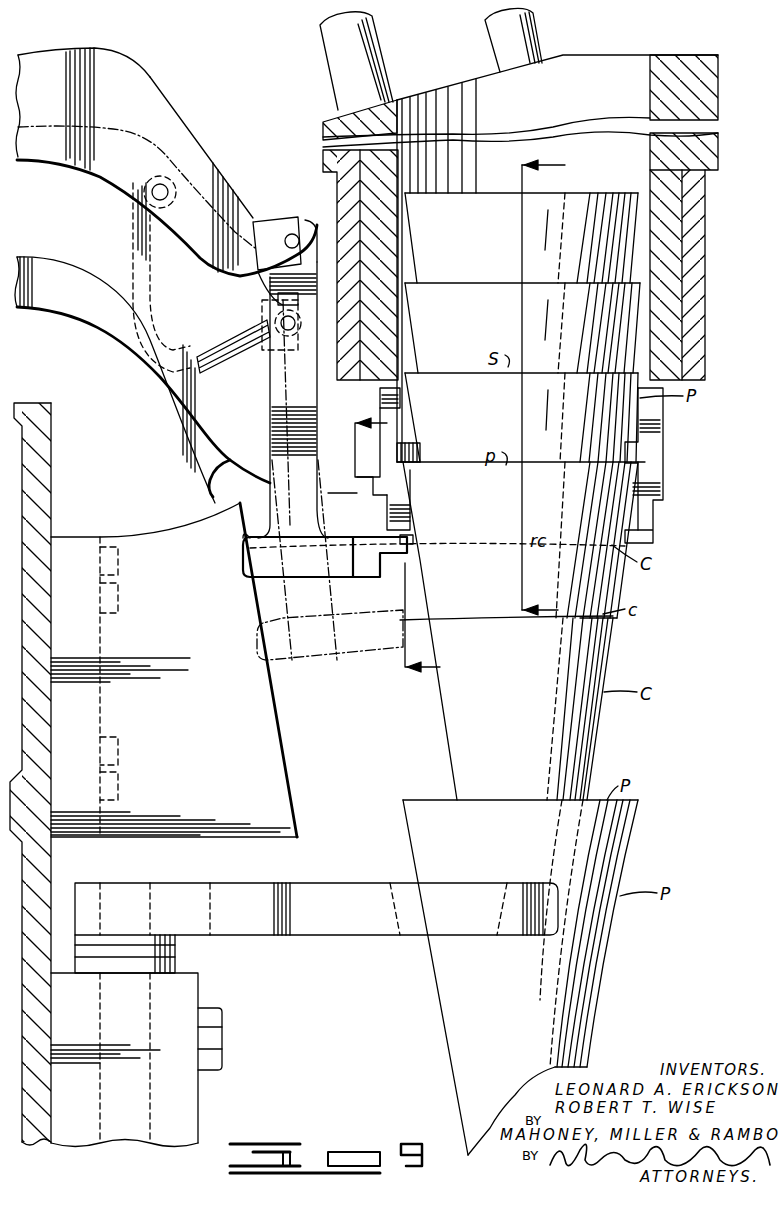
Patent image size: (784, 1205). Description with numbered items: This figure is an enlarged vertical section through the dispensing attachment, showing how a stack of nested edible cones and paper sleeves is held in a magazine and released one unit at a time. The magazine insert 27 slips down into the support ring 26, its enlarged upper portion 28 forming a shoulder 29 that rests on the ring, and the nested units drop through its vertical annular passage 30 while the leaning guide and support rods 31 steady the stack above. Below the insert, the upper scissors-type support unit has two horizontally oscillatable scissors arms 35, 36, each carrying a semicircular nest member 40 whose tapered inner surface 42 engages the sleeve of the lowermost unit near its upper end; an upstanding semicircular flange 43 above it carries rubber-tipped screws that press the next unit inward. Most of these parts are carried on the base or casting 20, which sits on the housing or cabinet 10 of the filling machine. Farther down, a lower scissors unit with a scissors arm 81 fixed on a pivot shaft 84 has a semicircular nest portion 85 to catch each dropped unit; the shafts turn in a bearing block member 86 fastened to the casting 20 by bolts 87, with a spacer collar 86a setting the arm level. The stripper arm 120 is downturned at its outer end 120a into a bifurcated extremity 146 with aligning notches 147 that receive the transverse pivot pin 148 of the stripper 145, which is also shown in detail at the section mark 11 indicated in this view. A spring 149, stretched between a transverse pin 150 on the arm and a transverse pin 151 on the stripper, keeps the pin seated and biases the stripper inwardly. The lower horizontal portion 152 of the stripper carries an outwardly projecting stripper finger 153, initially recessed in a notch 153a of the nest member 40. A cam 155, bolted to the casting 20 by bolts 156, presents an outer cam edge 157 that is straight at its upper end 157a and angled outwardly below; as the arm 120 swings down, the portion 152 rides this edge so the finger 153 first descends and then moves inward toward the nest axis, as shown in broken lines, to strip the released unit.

The base or casting 20 is at (53, 436).
The support ring 26 is at (697, 310).
The magazine insert 27 is at (668, 220).
The enlarged upper portion 28 is at (718, 102).
The shoulder 29 is at (703, 170).
The vertical annular passage 30 is at (610, 72).
The guide and support rods 31 is at (376, 31).
The scissors arm 35 is at (213, 493).
The scissors arm 36 is at (143, 375).
The nest member 40 is at (655, 423).
The tapered inner surface 42 is at (640, 473).
The upstanding semicircular flange 43 is at (380, 395).
The scissors arm 81 is at (342, 920).
The pivot shaft 84 is at (152, 895).
The semicircular nest portion 85 is at (403, 906).
The bearing block member 86 is at (195, 1000).
The spacer collar 86a is at (177, 954).
The bolts 87 is at (224, 1035).
The stripper arm 120 is at (93, 55).
The downturned outer end 120a is at (200, 143).
The stripper 145 is at (277, 388).
The bifurcated extremity 146 is at (258, 222).
The aligning notches 147 is at (297, 236).
The transverse pivot pin 148 is at (258, 310).
The spring 149 is at (137, 232).
The transverse pin 150 is at (163, 180).
The transverse pin 151 is at (262, 314).
The horizontal portion 152 is at (308, 560).
The stripper finger 153 is at (412, 543).
The notch 153a is at (407, 527).
The cam 155 is at (208, 648).
The bolts 156 is at (118, 753).
The cam edge 157 is at (298, 798).
The straight upper end of cam edge 157a is at (243, 538).
The housing or cabinet 10 is at (524, 391).
The section line 11- 11 is at (384, 550).